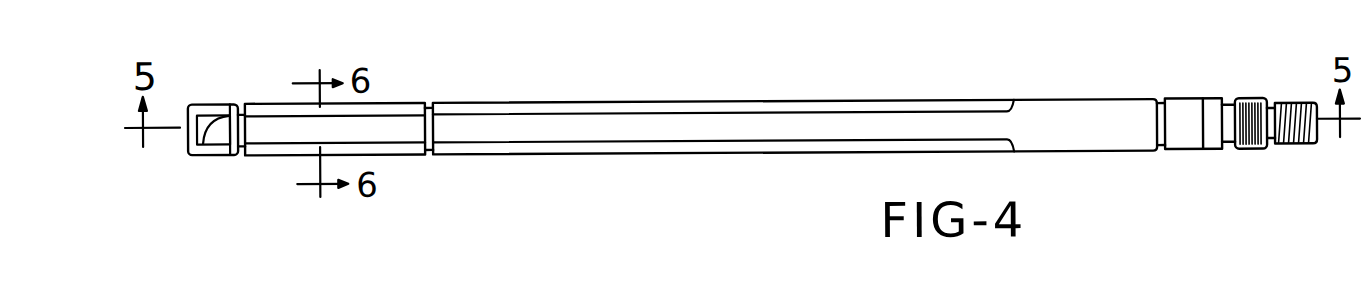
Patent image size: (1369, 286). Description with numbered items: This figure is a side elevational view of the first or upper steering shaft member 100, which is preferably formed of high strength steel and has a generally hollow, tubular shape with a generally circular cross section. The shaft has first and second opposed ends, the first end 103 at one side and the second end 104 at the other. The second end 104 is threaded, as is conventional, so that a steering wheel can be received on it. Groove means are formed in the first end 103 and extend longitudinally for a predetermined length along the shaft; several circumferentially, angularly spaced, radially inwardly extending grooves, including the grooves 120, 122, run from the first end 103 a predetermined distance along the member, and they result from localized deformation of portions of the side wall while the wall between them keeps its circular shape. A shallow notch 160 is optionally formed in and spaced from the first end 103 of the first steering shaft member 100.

The first steering shaft member 100 is at (567, 61).
The first end 103 is at (187, 117).
The second end 104 is at (1287, 104).
The groove 120 is at (677, 110).
The groove 122 is at (621, 142).
The shallow notch 160 is at (221, 148).